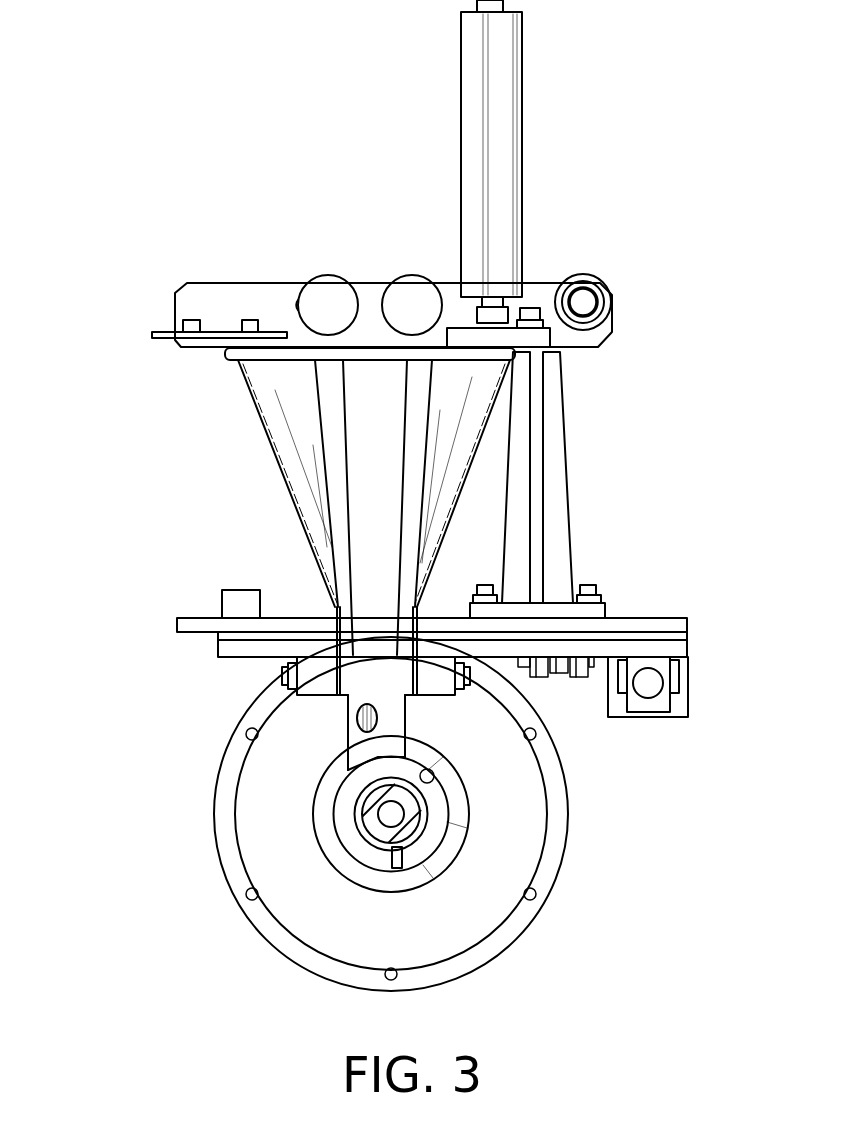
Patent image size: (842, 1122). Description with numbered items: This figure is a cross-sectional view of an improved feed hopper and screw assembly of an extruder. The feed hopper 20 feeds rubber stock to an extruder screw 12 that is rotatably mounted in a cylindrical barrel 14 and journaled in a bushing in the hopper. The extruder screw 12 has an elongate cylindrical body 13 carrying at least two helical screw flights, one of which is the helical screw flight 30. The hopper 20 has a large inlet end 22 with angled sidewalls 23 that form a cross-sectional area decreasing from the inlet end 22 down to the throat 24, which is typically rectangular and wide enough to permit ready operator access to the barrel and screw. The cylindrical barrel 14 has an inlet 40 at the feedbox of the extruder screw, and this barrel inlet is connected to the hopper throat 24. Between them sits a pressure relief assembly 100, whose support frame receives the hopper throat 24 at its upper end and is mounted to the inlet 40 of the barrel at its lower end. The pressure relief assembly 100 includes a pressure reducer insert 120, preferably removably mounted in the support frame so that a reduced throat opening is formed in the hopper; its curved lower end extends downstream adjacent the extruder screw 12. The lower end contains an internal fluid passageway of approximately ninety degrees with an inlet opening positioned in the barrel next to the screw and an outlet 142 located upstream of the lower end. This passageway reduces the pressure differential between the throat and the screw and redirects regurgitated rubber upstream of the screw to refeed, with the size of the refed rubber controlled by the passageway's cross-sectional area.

The extruder screw 12 is at (432, 813).
The elongate cylindrical body 13 is at (417, 837).
The cylindrical barrel 14 is at (442, 787).
The feed hopper 20 is at (270, 448).
The inlet end 22 is at (281, 299).
The angled sidewalls 23 is at (410, 463).
The throat 24 is at (377, 635).
The helical screw flight 30 is at (403, 860).
The inlet 40 is at (474, 657).
The pressure relief assembly 100 is at (270, 675).
The pressure reducer insert 120 is at (348, 753).
The outlet 142 is at (357, 713).